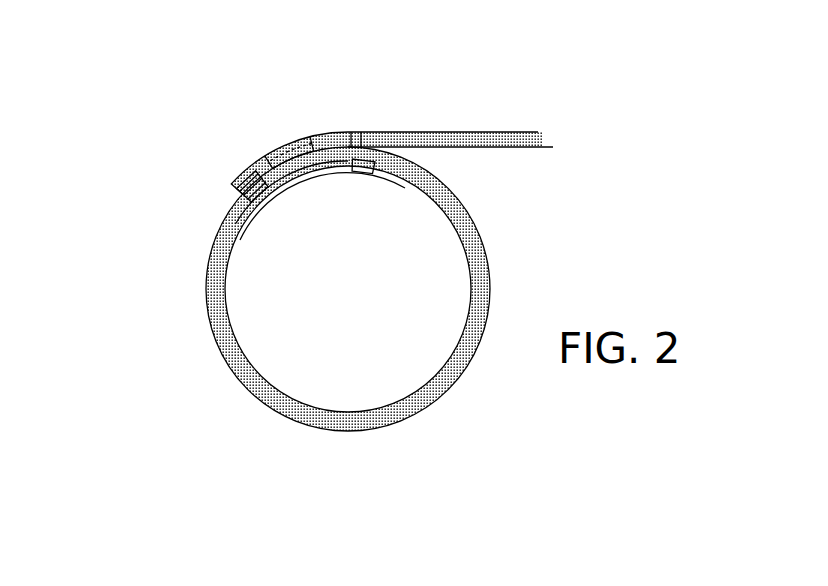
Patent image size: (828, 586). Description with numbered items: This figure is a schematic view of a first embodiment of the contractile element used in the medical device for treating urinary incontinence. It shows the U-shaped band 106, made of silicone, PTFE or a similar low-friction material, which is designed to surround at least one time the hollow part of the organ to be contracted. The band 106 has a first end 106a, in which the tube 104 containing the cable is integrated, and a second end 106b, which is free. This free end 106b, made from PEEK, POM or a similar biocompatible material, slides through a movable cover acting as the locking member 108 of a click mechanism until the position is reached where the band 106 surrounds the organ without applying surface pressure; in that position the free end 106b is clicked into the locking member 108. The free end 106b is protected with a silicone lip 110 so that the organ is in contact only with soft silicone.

The tube 104 is at (510, 133).
The band 106 is at (213, 270).
The first end 106a is at (343, 118).
The second end 106b is at (318, 185).
The locking member 108 is at (292, 160).
The silicone lip 110 is at (265, 200).